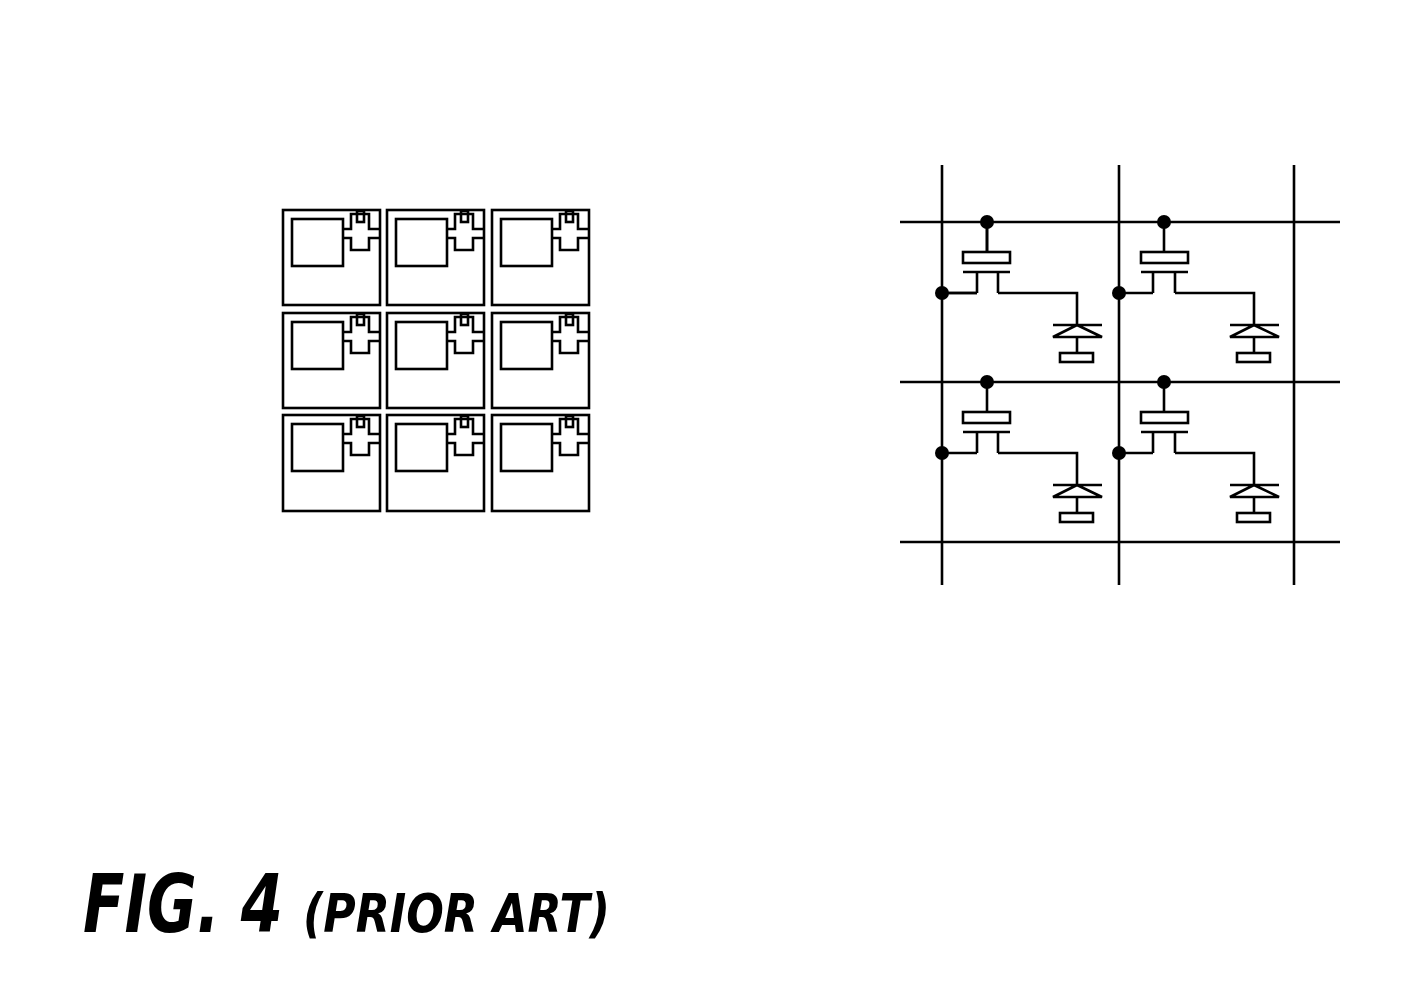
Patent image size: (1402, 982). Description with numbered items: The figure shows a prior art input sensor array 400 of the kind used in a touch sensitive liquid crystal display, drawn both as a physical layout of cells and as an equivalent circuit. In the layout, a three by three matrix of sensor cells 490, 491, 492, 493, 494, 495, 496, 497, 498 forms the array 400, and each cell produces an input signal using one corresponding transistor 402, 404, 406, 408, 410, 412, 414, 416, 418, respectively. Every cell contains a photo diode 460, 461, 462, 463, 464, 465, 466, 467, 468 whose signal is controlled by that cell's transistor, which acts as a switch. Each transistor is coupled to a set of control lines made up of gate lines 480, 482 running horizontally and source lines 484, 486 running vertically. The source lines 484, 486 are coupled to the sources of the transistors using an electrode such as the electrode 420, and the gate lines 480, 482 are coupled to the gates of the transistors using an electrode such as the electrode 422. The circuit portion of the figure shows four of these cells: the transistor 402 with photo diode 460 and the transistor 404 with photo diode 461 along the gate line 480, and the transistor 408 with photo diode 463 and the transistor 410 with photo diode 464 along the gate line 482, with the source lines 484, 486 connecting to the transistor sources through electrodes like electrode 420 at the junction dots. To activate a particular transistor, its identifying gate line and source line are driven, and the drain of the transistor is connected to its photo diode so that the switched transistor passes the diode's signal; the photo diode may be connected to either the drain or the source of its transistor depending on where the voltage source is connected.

The input sensor array 400 is at (976, 104).
The transistor 402 is at (359, 215).
The transistor 404 is at (464, 215).
The transistor 406 is at (570, 215).
The transistor 408 is at (360, 354).
The transistor 410 is at (464, 354).
The transistor 412 is at (569, 354).
The transistor 414 is at (360, 456).
The transistor 416 is at (464, 456).
The transistor 418 is at (569, 456).
The electrode 420 is at (960, 294).
The electrode 422 is at (988, 240).
The photo diode 460 is at (1060, 337).
The photo diode 461 is at (1238, 338).
The photo diode 462 is at (526, 242).
The photo diode 463 is at (1058, 496).
The photo diode 464 is at (1237, 514).
The photo diode 465 is at (526, 345).
The photo diode 466 is at (317, 447).
The photo diode 467 is at (421, 447).
The photo diode 468 is at (526, 447).
The gate line 480 is at (1317, 222).
The gate line 482 is at (1317, 382).
The source line 484 is at (940, 563).
The source line 486 is at (1117, 563).
The sensor cell 490 is at (320, 210).
The sensor cell 491 is at (430, 210).
The sensor cell 492 is at (537, 210).
The sensor cell 493 is at (283, 353).
The sensor cell 494 is at (483, 402).
The sensor cell 495 is at (588, 382).
The sensor cell 496 is at (283, 452).
The sensor cell 497 is at (412, 511).
The sensor cell 498 is at (520, 511).